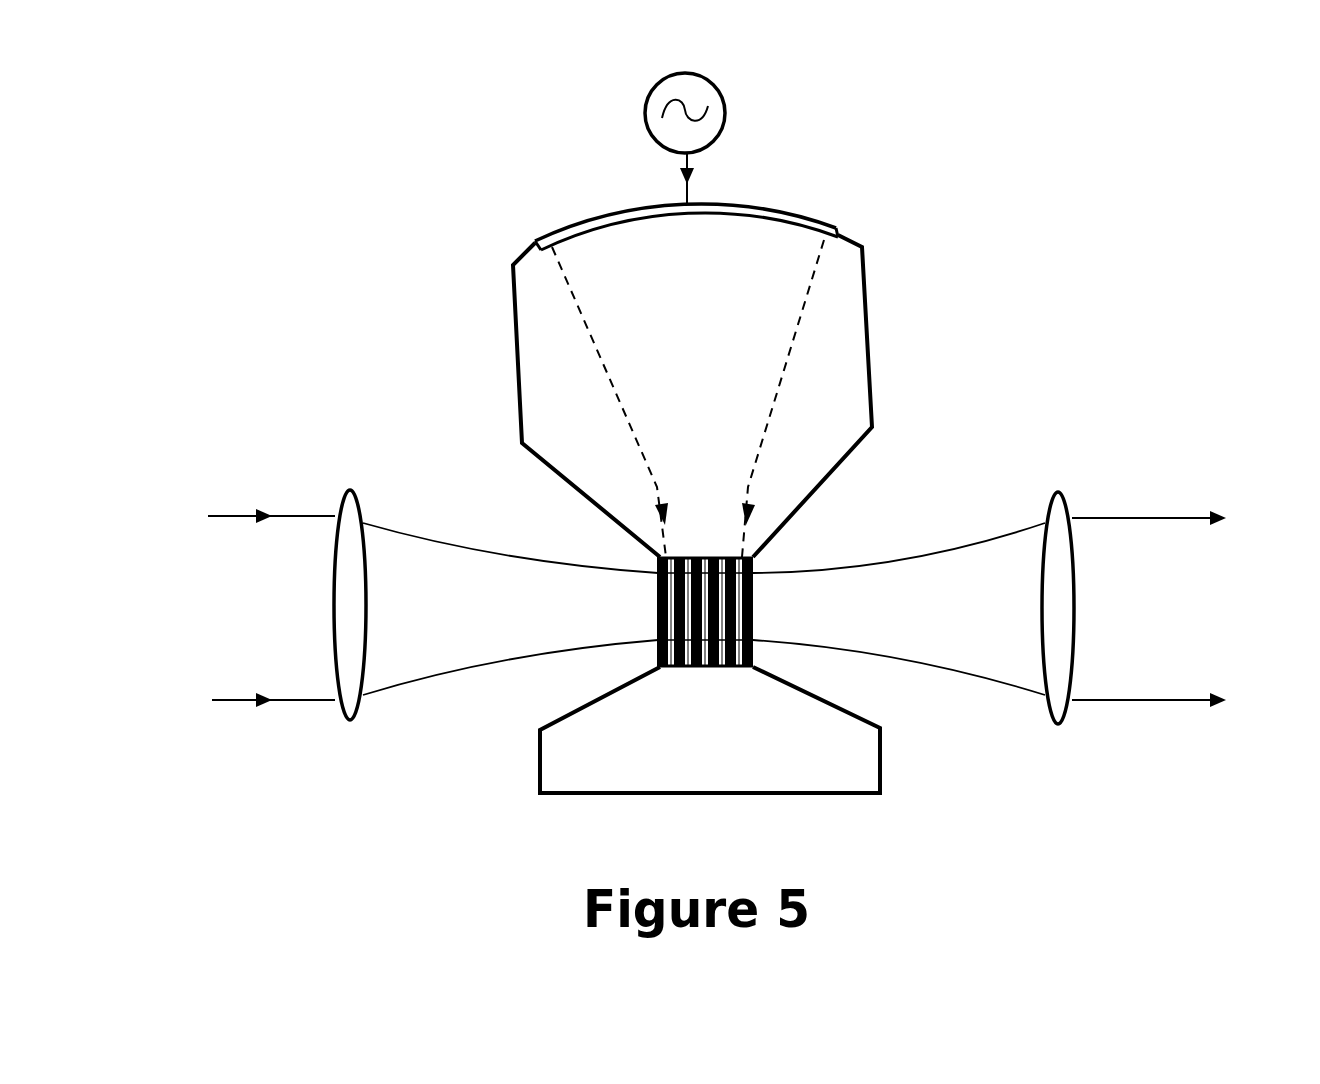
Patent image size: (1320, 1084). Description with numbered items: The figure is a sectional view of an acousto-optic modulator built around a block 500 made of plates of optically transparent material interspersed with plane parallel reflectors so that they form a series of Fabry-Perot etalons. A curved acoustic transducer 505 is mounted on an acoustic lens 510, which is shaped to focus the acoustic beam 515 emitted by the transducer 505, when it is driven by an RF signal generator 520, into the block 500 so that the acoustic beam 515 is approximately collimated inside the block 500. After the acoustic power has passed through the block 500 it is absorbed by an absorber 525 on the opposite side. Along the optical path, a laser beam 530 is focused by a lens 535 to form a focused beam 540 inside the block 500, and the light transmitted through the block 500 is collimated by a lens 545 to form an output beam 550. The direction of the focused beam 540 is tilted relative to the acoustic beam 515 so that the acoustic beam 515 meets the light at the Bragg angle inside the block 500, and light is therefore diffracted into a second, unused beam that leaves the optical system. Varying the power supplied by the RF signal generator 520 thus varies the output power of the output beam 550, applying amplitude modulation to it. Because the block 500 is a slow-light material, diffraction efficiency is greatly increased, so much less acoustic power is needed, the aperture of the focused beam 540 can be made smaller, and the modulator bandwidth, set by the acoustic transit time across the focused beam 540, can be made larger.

The block 500 is at (635, 652).
The curved acoustic transducer 505 is at (797, 210).
The acoustic lens 510 is at (872, 319).
The acoustic beam 515 is at (598, 357).
The RF signal generator 520 is at (725, 108).
The absorber 525 is at (880, 762).
The laser beam 530 is at (290, 510).
The lens 535 is at (350, 722).
The focused beam 540 is at (560, 590).
The lens 545 is at (1050, 503).
The output beam 550 is at (1140, 515).